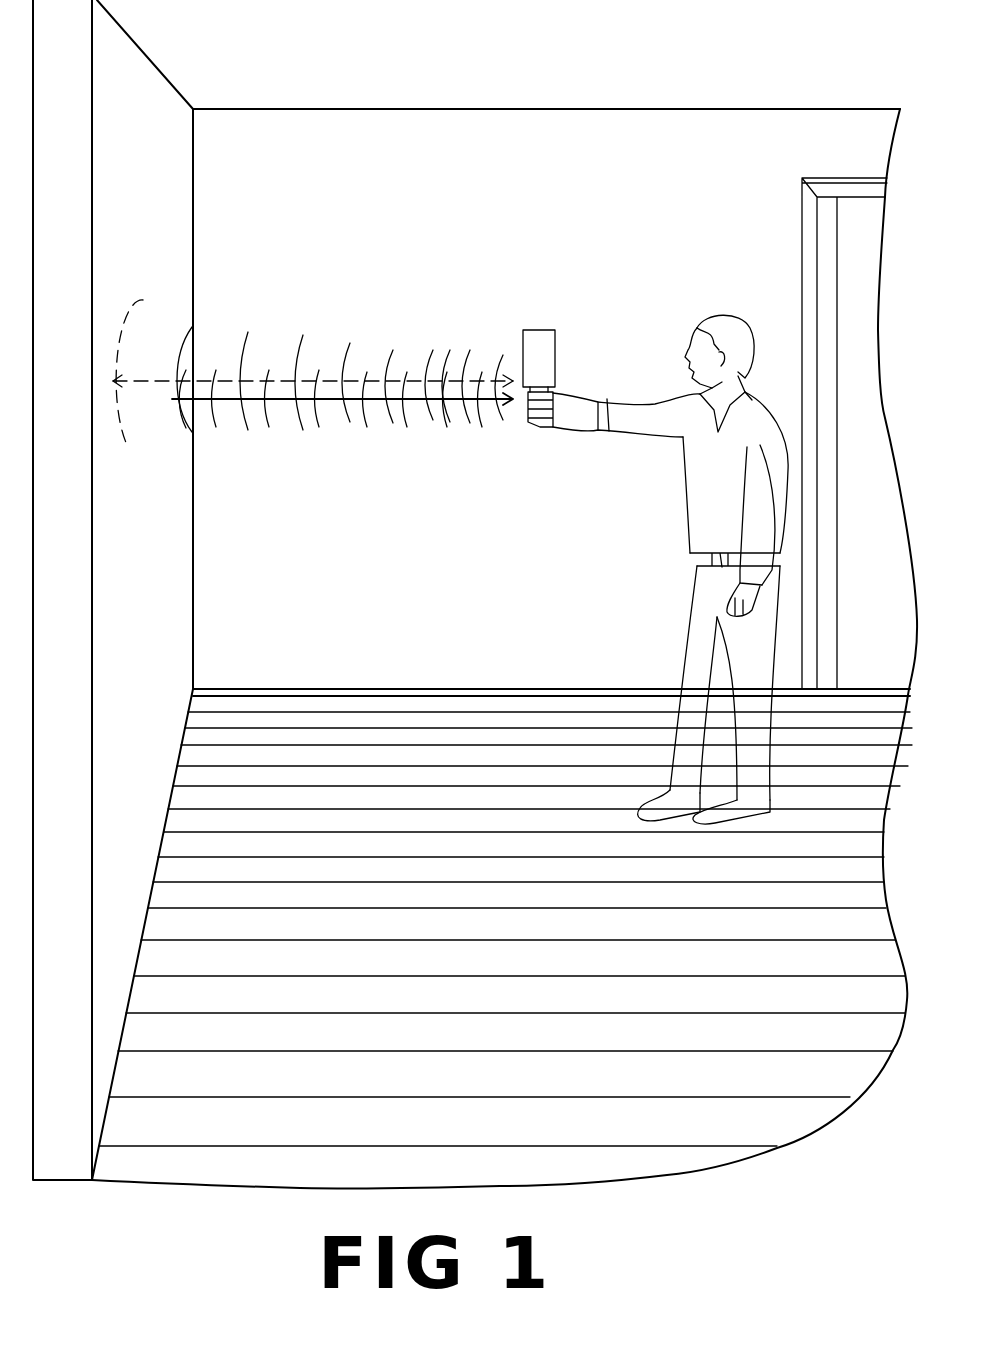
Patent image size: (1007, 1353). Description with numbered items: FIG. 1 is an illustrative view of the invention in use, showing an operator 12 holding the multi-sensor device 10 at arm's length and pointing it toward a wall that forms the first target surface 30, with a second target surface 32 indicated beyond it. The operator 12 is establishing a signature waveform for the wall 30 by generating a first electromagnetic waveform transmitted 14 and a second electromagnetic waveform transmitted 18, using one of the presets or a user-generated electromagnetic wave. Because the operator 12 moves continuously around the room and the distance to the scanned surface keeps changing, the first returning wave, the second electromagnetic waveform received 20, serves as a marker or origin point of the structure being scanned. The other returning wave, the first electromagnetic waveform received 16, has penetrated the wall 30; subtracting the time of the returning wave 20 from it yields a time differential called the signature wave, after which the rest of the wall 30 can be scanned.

The multi-sensor device 10 is at (557, 306).
The operator 12 is at (735, 325).
The first electromagnetic waveform transmitted 14 is at (388, 353).
The first electromagnetic waveform received 16 is at (302, 380).
The second electromagnetic waveform transmitted 18 is at (440, 420).
The second electromagnetic waveform received 20 is at (375, 417).
The first target surface 30 is at (172, 399).
The second target surface 32 is at (141, 288).